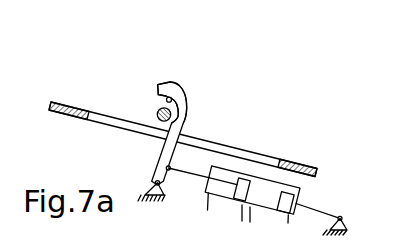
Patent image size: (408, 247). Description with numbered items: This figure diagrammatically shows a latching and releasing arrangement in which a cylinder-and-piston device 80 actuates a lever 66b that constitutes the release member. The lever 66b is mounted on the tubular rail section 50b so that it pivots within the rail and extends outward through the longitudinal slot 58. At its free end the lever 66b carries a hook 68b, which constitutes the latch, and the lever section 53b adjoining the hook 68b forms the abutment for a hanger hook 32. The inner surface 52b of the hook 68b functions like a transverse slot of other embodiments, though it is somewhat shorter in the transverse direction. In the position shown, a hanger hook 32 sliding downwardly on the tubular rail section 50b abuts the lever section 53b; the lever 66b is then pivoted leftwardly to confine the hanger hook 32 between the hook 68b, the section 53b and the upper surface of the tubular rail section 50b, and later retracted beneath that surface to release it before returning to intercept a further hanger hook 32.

The hanger hook 32 is at (157, 113).
The tubular rail section 50b is at (304, 160).
The inner surface of the hook 52b is at (184, 93).
The lever section 53b is at (185, 118).
The longitudinal slot 58 is at (240, 150).
The lever 66b is at (157, 160).
The hook 68b is at (167, 83).
The cylinder-and-piston device 80 is at (305, 193).